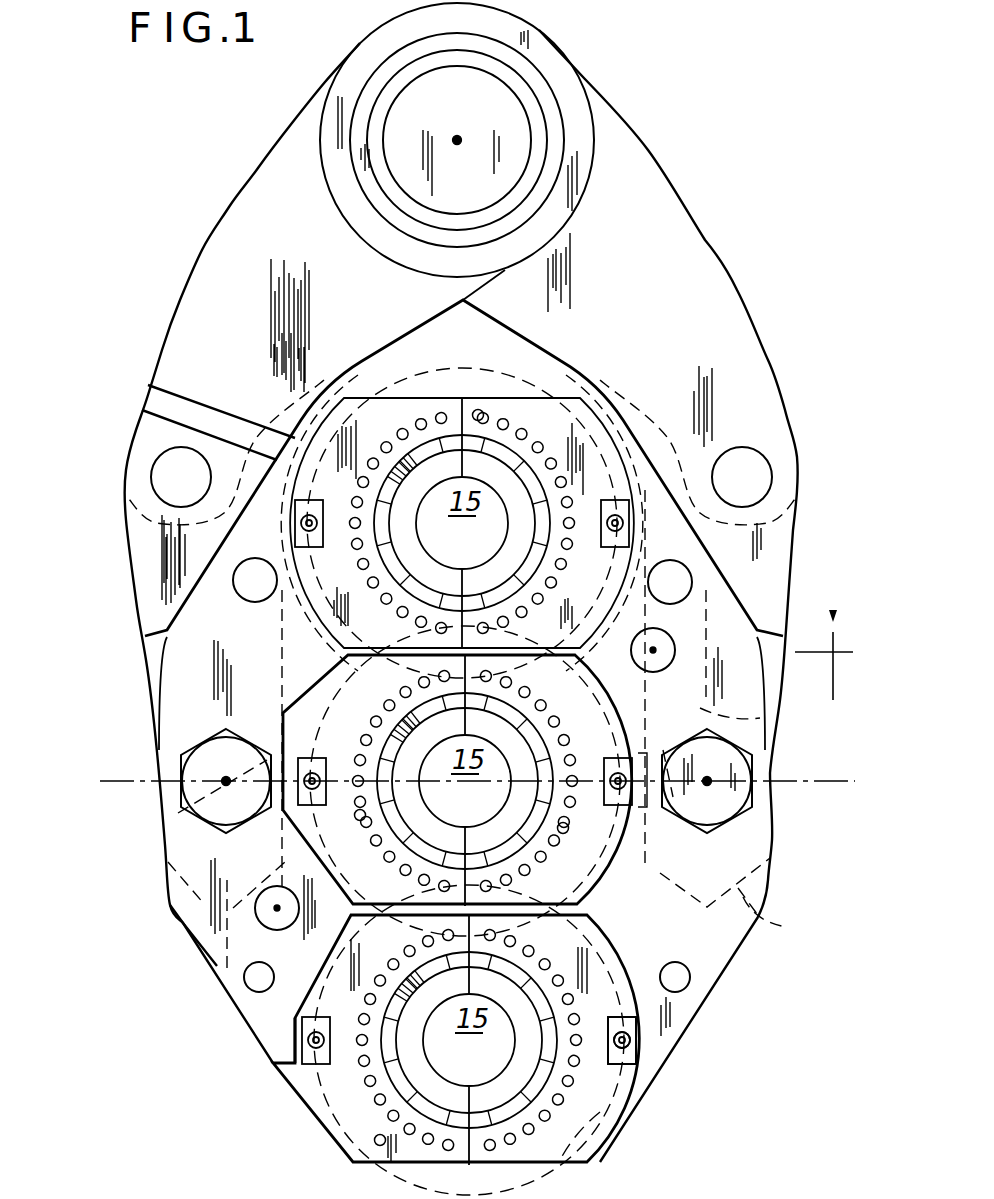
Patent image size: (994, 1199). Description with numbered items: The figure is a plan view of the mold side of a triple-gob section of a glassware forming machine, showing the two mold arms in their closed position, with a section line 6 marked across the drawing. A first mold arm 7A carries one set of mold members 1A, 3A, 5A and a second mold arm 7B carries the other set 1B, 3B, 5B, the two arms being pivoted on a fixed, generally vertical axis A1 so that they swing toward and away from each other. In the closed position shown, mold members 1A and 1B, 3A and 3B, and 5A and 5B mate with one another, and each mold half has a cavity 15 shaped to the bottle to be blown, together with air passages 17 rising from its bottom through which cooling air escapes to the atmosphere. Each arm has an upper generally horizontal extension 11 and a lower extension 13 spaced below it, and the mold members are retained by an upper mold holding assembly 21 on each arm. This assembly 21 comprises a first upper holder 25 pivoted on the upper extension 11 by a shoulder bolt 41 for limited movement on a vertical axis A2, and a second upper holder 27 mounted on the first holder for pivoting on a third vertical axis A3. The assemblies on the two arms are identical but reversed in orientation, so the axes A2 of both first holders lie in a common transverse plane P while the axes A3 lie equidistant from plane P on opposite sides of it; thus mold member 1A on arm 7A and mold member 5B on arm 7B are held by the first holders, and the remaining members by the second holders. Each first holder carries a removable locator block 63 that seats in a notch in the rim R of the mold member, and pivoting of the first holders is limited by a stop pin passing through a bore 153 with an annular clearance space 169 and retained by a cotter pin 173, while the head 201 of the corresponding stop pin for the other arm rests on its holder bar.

The first fixed generally vertical axis A1 is at (460, 137).
The first mold arm 7A is at (262, 203).
The second mold arm 7B is at (685, 248).
The cavity 15 is at (465, 781).
The air passages 17 is at (477, 410).
The annular clearance space 169 is at (345, 572).
The mold member 1A is at (352, 588).
The mold member 1B is at (575, 604).
The head of stop pin 201 is at (693, 588).
The section line 6- 6 is at (734, 655).
The third vertical axis A3 is at (656, 651).
The second upper holder 27 is at (708, 708).
The vertical axis A2 is at (220, 776).
The generally vertical plane P is at (790, 782).
The shoulder bolt 41 is at (218, 797).
The upper mold holding assembly 21 is at (798, 884).
The lower generally horizontal extension 13 is at (760, 918).
The mold member 3A is at (250, 972).
The mold member 3B is at (548, 877).
The bore 153 is at (686, 984).
The first upper holder 25 is at (152, 679).
The locator block 63 is at (630, 1051).
The rim of mold member R is at (623, 1113).
The mold member 5A is at (375, 1112).
The mold member 5B is at (555, 1145).
The upper generally horizontal extension 11 is at (186, 916).
The cotter pin 173 is at (254, 984).